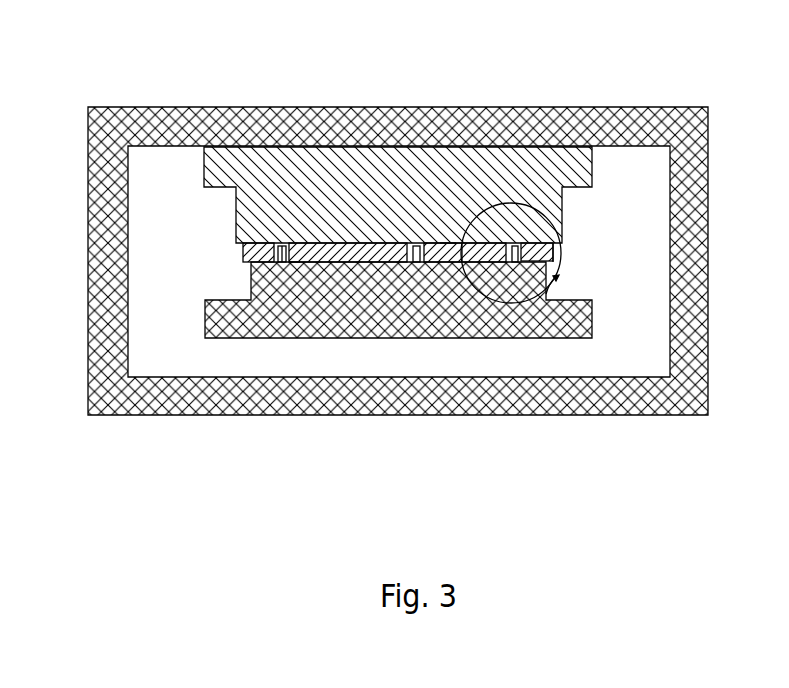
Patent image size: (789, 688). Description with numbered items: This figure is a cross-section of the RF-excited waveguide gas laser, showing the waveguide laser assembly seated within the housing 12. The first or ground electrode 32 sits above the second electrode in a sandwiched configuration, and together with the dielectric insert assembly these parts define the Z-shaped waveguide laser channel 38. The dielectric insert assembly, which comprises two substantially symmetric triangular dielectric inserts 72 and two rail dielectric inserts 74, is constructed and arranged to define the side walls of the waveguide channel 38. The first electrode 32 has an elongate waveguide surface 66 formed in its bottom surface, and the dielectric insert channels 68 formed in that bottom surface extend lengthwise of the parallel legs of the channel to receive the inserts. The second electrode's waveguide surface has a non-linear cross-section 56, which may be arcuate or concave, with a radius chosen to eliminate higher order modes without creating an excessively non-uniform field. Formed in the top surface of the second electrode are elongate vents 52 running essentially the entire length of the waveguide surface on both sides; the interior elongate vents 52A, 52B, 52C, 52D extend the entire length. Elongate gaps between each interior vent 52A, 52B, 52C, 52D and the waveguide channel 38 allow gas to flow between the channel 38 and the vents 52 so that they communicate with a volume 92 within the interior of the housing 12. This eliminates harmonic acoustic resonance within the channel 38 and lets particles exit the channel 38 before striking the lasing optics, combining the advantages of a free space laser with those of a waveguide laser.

The housing 12 is at (690, 328).
The first electrode 32 is at (347, 167).
The Z-shaped waveguide laser channel 38 is at (295, 263).
The elongate vents 52 is at (550, 322).
The interior elongate vent 52A is at (283, 263).
The interior elongate vent 52B is at (401, 263).
The interior elongate vent 52C is at (433, 265).
The interior elongate vent 52D is at (493, 265).
The non-linear cross-section 56 is at (280, 262).
The elongate waveguide surface 66 is at (517, 265).
The gap 68 is at (561, 254).
The triangular dielectric inserts 72 is at (449, 243).
The rail dielectric inserts 74 is at (556, 248).
The volume 92 is at (653, 306).